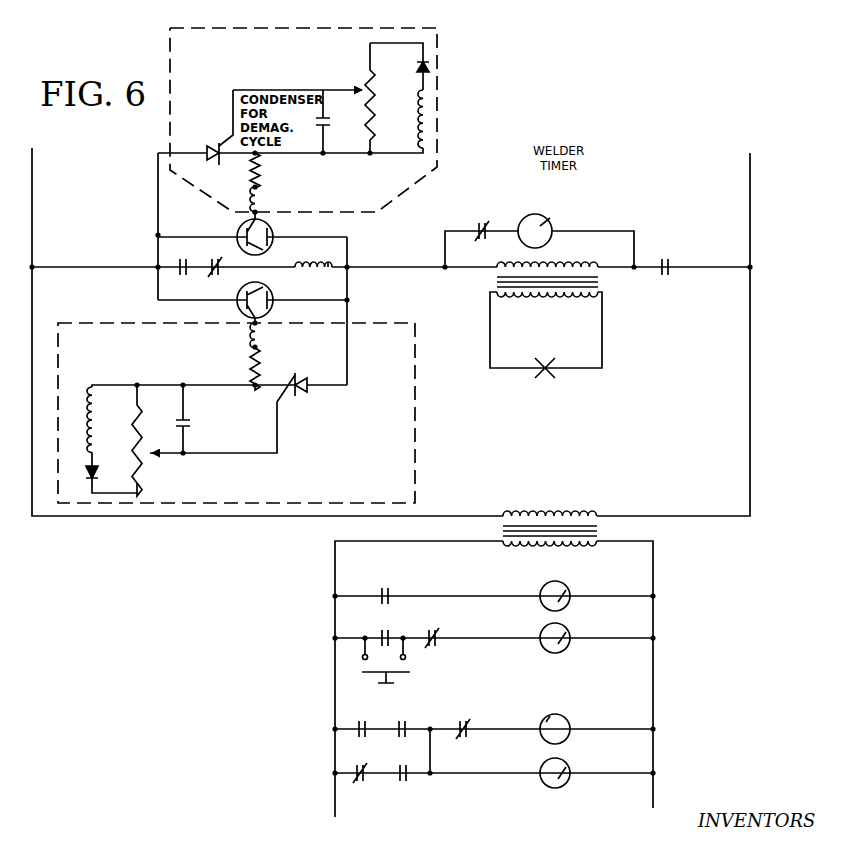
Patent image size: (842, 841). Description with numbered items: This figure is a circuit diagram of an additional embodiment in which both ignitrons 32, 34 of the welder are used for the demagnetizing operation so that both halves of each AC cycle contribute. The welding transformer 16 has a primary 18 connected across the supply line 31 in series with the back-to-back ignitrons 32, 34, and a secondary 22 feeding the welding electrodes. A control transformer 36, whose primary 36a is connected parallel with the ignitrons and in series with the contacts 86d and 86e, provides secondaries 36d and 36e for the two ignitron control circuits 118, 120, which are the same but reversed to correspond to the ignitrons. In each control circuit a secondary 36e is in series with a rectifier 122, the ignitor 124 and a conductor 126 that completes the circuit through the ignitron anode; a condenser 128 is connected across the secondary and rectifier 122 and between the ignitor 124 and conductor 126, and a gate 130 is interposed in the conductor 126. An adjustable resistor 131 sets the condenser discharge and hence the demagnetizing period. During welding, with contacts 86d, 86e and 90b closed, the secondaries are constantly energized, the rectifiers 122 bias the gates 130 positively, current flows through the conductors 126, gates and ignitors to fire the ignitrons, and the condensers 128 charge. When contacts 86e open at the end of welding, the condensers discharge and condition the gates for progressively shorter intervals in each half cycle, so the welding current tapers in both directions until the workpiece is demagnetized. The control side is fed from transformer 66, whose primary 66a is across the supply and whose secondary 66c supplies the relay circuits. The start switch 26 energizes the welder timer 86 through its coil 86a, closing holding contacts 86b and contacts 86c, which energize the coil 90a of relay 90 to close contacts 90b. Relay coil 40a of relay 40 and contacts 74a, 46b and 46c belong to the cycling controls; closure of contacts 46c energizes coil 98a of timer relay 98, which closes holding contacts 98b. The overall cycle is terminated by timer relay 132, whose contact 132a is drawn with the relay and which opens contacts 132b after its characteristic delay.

The transformer 16 is at (610, 281).
The primary 18 is at (568, 267).
The secondary 22 is at (549, 298).
The switch 26 is at (409, 663).
The supply line 31 is at (436, 264).
The ignitron 32 is at (243, 308).
The ignitron 34 is at (275, 232).
The transformer 36 is at (320, 260).
The primary 36a is at (329, 272).
The secondary 36d is at (90, 395).
The secondary 36e is at (430, 137).
The welder timer relay 40 is at (535, 211).
The relay contact 40a is at (548, 224).
The contacts 46b is at (468, 720).
The contacts 46c is at (403, 720).
The transformer 66 is at (608, 528).
The primary 66a is at (566, 480).
The secondary 66c is at (518, 543).
The relay contact 74a is at (353, 710).
The timer relay 86 is at (481, 222).
The coil 86a is at (566, 633).
The holding contacts 86b is at (387, 628).
The contacts 86c is at (394, 562).
The contacts 86d is at (178, 276).
The contacts 86e is at (216, 257).
The relay 90 is at (545, 584).
The coil 90a is at (566, 590).
The contacts 90b is at (667, 256).
The relay 98 is at (544, 767).
The coil 98a is at (566, 768).
The holding contacts 98b is at (404, 783).
The control circuit 118 is at (424, 427).
The control circuit 120 is at (438, 105).
The rectifier 122 is at (430, 72).
The ignitor 124 is at (260, 212).
The conductor 126 is at (158, 195).
The condenser 128 is at (331, 120).
The gate 130 is at (220, 142).
The adjustable resistor 131 is at (362, 72).
The timer relay 132 is at (567, 715).
The relay contact 132a is at (560, 690).
The contacts 132b is at (447, 622).